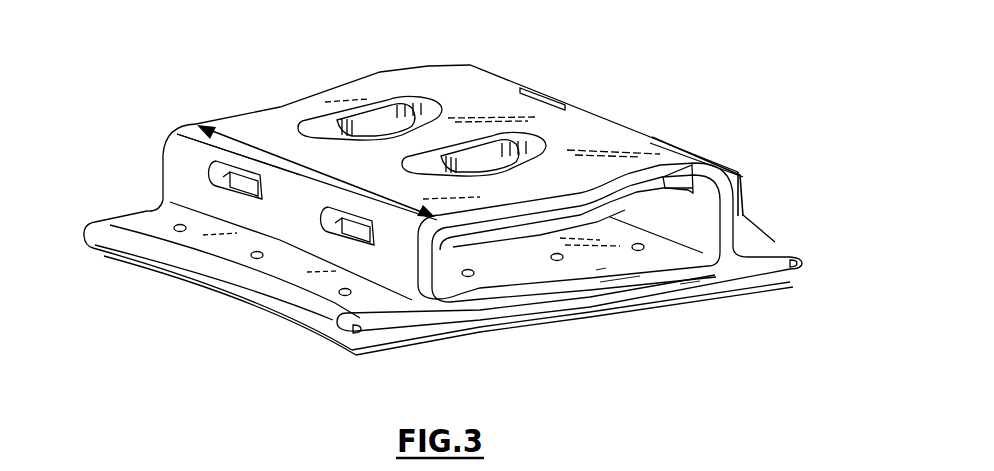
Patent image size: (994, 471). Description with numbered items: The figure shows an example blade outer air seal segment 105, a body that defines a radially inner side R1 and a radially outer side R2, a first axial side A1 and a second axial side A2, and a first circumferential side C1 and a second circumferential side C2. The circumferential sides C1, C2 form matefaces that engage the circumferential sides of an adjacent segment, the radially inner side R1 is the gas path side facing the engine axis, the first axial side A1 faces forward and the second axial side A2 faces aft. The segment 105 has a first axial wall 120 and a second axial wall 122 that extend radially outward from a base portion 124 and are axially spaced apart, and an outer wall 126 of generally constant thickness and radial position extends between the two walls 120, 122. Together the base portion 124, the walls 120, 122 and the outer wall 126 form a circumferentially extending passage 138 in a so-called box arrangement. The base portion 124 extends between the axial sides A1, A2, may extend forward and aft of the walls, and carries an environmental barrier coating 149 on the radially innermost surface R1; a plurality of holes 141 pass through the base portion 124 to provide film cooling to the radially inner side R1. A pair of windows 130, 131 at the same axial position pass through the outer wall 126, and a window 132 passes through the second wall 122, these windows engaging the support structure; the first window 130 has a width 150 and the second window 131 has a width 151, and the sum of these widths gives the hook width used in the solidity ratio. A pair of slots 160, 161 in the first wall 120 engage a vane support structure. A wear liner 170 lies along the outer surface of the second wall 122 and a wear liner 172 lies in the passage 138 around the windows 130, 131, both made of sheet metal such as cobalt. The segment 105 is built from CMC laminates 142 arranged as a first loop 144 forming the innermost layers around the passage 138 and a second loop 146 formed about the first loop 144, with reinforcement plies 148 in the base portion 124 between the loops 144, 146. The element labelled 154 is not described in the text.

The BOAS segment 105 is at (718, 68).
The first axial wall 120 is at (190, 170).
The second axial wall 122 is at (725, 212).
The base portion 124 is at (435, 325).
The outer wall 126 is at (617, 168).
The first window 130 is at (483, 145).
The second window 131 is at (373, 98).
The window 132 is at (590, 117).
The passage 138 is at (683, 218).
The holes 141 is at (557, 260).
The CMC laminates 142 is at (728, 300).
The first loop 144 is at (670, 190).
The second loop 146 is at (703, 172).
The reinforcement plies 148 is at (703, 305).
The environmental barrier coating 149 is at (385, 348).
The width of first window 150 is at (394, 184).
The width of second window 151 is at (287, 142).
The bend edge 154 is at (317, 181).
The slot 160 is at (350, 232).
The slot 161 is at (230, 190).
The wear liner 170 is at (790, 245).
The wear liner 172 is at (548, 233).
The first axial side A1 is at (330, 330).
The second axial side A2 is at (782, 240).
The first circumferential side C1 is at (782, 282).
The second circumferential side C2 is at (145, 212).
The radially inner side R1 is at (627, 312).
The radially outer side R2 is at (600, 270).